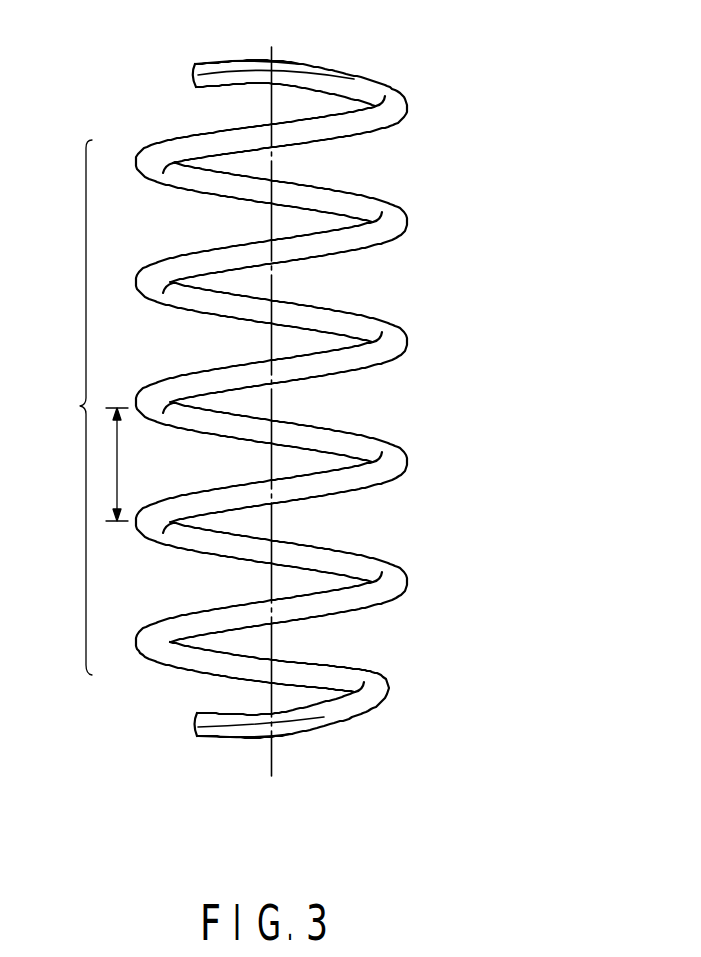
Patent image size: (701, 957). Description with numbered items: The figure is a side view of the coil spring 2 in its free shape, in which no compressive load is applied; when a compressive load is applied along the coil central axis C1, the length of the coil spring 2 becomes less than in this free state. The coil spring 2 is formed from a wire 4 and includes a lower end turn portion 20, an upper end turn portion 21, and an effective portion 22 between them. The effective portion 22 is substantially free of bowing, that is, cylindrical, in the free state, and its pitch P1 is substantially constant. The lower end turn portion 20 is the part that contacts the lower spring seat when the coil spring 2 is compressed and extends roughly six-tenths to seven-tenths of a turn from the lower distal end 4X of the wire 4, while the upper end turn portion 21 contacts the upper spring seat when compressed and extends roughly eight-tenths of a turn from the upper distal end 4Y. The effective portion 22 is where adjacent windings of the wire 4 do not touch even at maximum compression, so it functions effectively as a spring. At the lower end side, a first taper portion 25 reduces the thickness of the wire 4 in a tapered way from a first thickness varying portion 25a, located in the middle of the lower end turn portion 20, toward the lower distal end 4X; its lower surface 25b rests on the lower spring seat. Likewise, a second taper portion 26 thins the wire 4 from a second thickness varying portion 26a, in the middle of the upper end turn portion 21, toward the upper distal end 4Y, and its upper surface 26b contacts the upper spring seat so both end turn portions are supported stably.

The coil spring 2 is at (280, 400).
The wire 4 is at (352, 440).
The lower distal end 4X is at (192, 723).
The upper distal end 4Y is at (192, 77).
The lower end turn portion 20 is at (369, 706).
The upper end turn portion 21 is at (373, 88).
The effective portion 22 is at (227, 407).
The first taper portion 25 is at (257, 714).
The first thickness varying portion 25a is at (323, 712).
The lower surface 25b is at (237, 738).
The second taper portion 26 is at (212, 64).
The second thickness varying portion 26a is at (350, 76).
The upper surface 26b is at (237, 61).
The coil central axis C1 is at (273, 287).
The pitch P1 is at (120, 466).